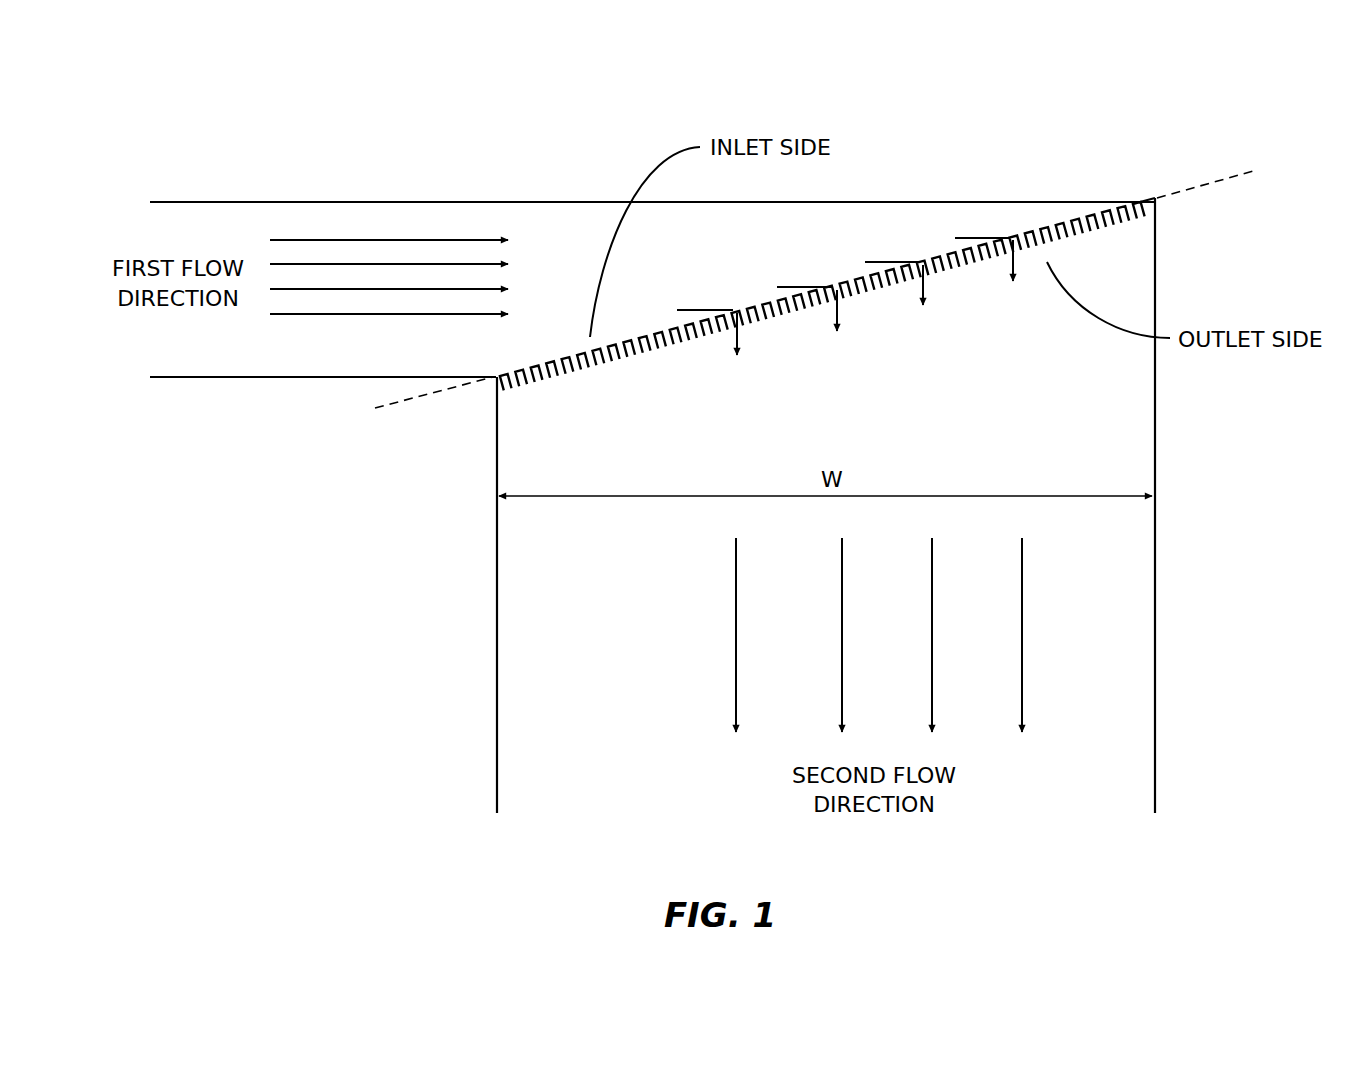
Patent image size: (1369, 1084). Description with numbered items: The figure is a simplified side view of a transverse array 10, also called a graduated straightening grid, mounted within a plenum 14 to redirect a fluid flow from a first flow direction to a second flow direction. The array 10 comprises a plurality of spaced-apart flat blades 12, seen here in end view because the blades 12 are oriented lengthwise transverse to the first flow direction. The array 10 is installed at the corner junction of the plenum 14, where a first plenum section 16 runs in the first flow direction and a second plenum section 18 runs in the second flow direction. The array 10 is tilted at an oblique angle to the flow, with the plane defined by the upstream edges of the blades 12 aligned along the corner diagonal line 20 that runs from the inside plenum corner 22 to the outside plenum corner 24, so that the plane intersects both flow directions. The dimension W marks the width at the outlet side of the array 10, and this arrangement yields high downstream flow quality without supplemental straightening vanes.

The transverse array 10 is at (978, 316).
The flat blades 12 is at (520, 393).
The plenum 14 is at (210, 202).
The first plenum section 16 is at (182, 360).
The second plenum section 18 is at (1123, 383).
The corner diagonal line 20 is at (1207, 180).
The inside plenum corner 22 is at (492, 377).
The outside plenum corner 24 is at (1165, 200).